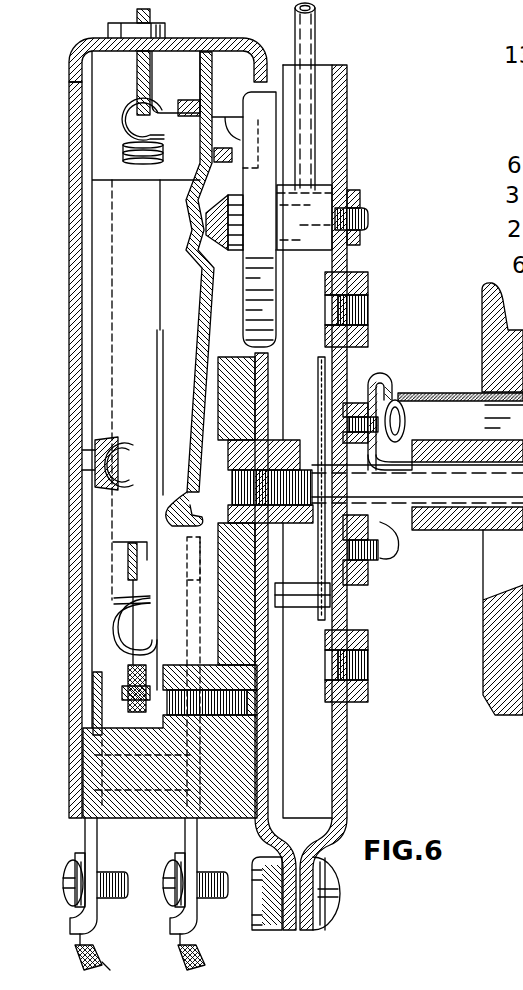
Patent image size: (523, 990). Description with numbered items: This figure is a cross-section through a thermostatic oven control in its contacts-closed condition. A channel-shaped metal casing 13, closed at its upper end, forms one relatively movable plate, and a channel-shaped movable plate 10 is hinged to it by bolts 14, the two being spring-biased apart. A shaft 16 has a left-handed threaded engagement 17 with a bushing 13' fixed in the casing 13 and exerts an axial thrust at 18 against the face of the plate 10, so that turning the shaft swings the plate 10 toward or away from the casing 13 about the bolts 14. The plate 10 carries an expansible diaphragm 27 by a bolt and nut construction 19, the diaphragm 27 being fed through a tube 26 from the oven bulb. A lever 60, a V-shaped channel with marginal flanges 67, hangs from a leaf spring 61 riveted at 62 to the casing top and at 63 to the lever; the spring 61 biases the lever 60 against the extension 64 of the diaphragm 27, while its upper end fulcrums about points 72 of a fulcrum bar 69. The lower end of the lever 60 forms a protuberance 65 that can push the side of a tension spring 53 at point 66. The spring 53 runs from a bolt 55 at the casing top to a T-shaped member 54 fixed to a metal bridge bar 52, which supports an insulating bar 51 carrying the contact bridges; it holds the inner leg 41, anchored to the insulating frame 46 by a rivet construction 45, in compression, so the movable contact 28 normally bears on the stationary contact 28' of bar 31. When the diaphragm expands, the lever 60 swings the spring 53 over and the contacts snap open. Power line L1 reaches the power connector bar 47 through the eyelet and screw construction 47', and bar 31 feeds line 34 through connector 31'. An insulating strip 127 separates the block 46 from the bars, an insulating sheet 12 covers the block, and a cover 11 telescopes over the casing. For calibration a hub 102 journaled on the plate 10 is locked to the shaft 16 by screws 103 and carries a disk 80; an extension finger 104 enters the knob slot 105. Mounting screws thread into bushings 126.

The movable plate 10 is at (347, 757).
The cover 11 is at (72, 568).
The insulating sheet 12 is at (82, 803).
The casing 13 is at (168, 44).
The bushing 13' is at (278, 460).
The bolts 14 is at (333, 910).
The shaft 16 is at (458, 497).
The threaded engagement 17 is at (276, 488).
The axial thrust point 18 is at (396, 440).
The bolt and nut construction 19 is at (355, 212).
The tube 26 is at (312, 27).
The expansible diaphragm 27 is at (263, 289).
The movable switch contact 28 is at (128, 449).
The stationary switch contact 28' is at (119, 439).
The bar 31 is at (84, 602).
The screw-threaded connector 31' is at (80, 867).
The line 34 is at (90, 952).
The inner leg portion 41 is at (138, 628).
The rivet construction 45 is at (128, 543).
The insulating frame 46 is at (233, 806).
The power connector bar 47 is at (170, 881).
The line eyelet and screw construction 47' is at (178, 876).
The insulating bar 51 is at (134, 675).
The metal outer bridge bar 52 is at (210, 678).
The tension spring 53 is at (130, 116).
The T-shaped member 54 is at (134, 708).
The bolt 55 is at (142, 60).
The lever 60 is at (203, 349).
The leaf spring 61 is at (247, 153).
The rivet 62 is at (176, 82).
The rivet 63 is at (230, 166).
The extension 64 is at (222, 249).
The protuberance 65 is at (190, 516).
The point 66 is at (163, 474).
The marginal flanges 67 is at (180, 318).
The fulcrum bar 69 is at (201, 112).
The fulcrum points 72 is at (200, 117).
The disk 80 is at (302, 579).
The hub 102 is at (352, 403).
The screws 103 is at (400, 403).
The extension finger 104 is at (451, 386).
The slot 105 is at (495, 440).
The bushings 126 is at (363, 283).
The insulating strip 127 is at (95, 703).
The power line L1 is at (200, 964).